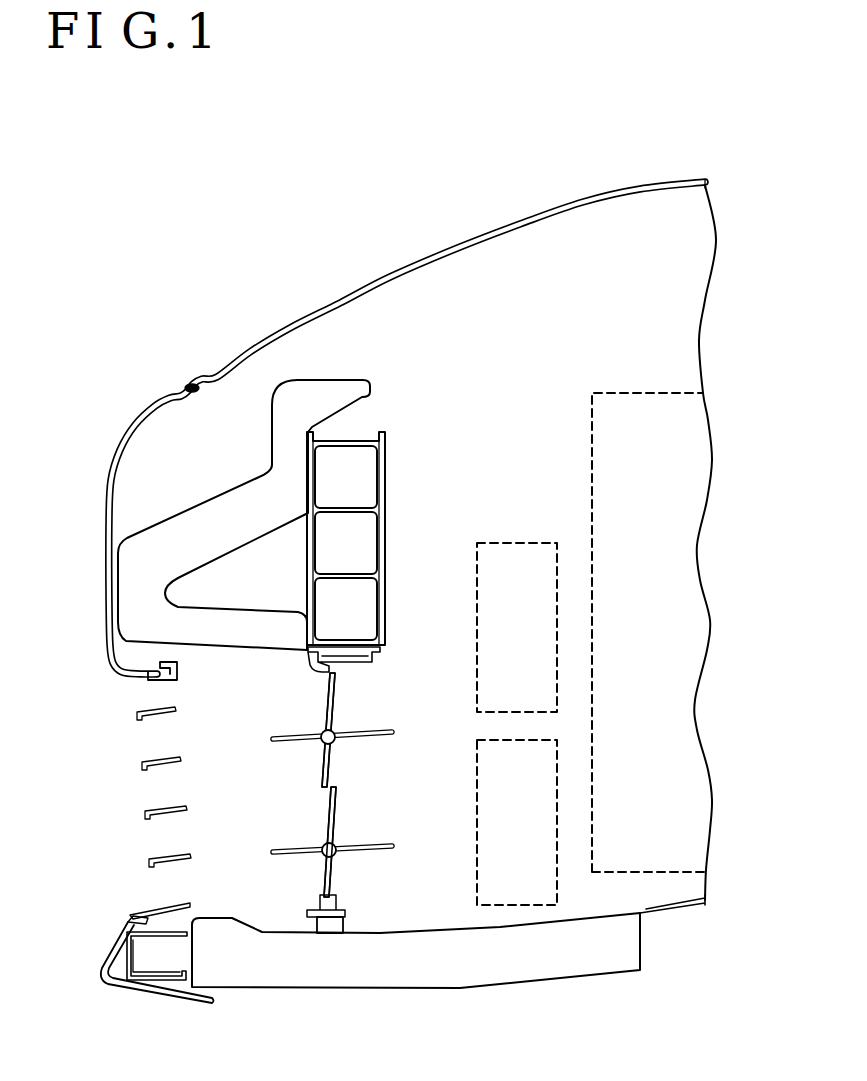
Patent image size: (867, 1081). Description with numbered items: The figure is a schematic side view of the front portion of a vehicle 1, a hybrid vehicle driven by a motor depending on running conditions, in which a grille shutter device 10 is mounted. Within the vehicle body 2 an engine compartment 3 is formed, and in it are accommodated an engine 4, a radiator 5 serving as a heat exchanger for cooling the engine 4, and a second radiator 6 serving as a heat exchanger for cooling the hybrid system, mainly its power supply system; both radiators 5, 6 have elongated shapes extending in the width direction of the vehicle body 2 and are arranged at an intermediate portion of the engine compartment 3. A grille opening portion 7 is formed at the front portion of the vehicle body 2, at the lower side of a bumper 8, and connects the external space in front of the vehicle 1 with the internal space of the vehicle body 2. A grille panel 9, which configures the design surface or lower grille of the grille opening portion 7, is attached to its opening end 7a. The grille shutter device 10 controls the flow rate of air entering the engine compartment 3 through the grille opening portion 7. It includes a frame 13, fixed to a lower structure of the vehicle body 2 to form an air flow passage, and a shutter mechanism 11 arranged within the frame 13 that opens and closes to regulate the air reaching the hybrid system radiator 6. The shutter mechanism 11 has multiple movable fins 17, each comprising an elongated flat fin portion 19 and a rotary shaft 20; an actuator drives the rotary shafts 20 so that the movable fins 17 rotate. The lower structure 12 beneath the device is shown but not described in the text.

The vehicle 1 is at (97, 175).
The vehicle body 2 is at (577, 199).
The engine compartment 3 is at (648, 304).
The engine 4 is at (657, 488).
The radiator 5 is at (529, 842).
The radiator 6 is at (529, 648).
The grille opening portion 7 is at (132, 693).
The opening end 7a is at (143, 912).
The bumper 8 is at (371, 419).
The grille panel 9 is at (139, 716).
The grille shutter device 10 is at (268, 718).
The shutter mechanism 11 is at (316, 775).
The floor panel 12 is at (447, 991).
The frame 13 is at (314, 916).
The movable fins 17 is at (414, 661).
The fin portions 19 is at (340, 692).
The rotary shafts 20 is at (337, 728).